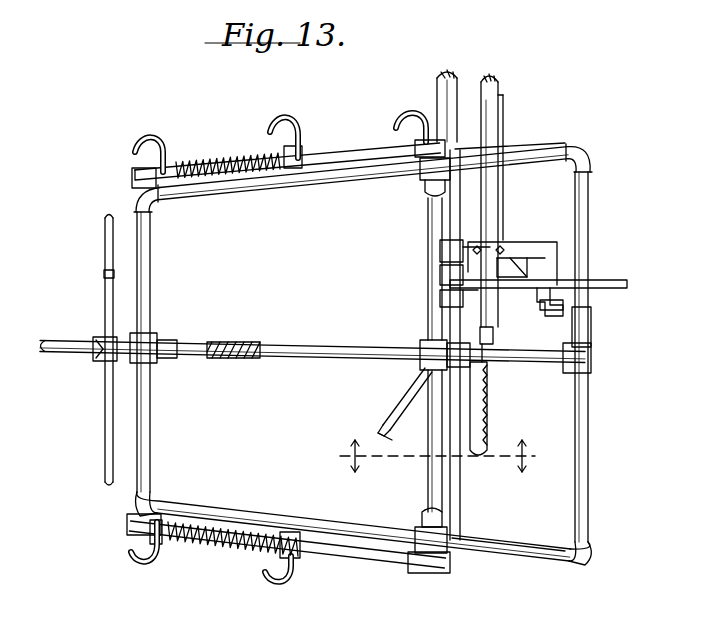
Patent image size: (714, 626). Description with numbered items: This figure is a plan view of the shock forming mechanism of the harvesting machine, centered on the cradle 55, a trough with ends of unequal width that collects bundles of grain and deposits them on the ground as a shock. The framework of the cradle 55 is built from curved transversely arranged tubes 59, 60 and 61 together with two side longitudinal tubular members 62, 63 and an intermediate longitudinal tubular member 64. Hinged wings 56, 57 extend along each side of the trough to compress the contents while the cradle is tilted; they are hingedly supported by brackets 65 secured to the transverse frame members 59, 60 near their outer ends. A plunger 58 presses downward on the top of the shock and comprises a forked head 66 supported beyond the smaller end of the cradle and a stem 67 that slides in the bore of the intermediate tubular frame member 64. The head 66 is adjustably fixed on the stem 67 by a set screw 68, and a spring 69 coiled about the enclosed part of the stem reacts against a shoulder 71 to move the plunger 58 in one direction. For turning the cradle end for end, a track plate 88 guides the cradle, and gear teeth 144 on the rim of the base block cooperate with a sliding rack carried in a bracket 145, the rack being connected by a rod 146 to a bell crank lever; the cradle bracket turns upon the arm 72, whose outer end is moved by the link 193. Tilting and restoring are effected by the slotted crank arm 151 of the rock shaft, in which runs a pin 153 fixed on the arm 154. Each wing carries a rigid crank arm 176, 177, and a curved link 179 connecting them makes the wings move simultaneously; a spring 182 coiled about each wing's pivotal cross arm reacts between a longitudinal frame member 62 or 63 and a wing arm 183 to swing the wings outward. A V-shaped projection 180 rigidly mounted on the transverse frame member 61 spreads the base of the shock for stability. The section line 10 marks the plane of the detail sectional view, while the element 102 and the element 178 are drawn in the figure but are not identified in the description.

The section line 10 is at (434, 456).
The cradle 55 is at (382, 356).
The hinged wing 56 is at (166, 148).
The hinged wing 57 is at (162, 549).
The plunger 58 is at (106, 273).
The transverse frame member 59 is at (151, 441).
The transverse frame member 60 is at (436, 471).
The transverse frame member 61 is at (576, 470).
The longitudinal frame member 62 is at (363, 178).
The longitudinal frame member 63 is at (346, 529).
The intermediate tubular frame member 64 is at (366, 358).
The bracket 65 is at (133, 192).
The forked head 66 is at (106, 329).
The stem 67 is at (55, 348).
The set screw 68 is at (97, 357).
The spring 69 is at (237, 357).
The shoulder 71 is at (211, 359).
The arm 72 is at (437, 96).
The track plate 88 is at (418, 376).
The fork 102 is at (393, 431).
The gear teeth 144 is at (424, 341).
The bracket 145 is at (494, 337).
The rod 146 is at (500, 118).
The crank arm 151 is at (600, 284).
The pin 153 is at (596, 283).
The arm 154 is at (598, 297).
The crank arm 176 is at (504, 131).
The crank arm 177 is at (456, 556).
The rail section 178 is at (472, 157).
The link 179 is at (462, 522).
The V-shaped projection 180 is at (589, 331).
The spring 182 is at (228, 160).
The arm 183 is at (305, 130).
The link 193 is at (489, 420).